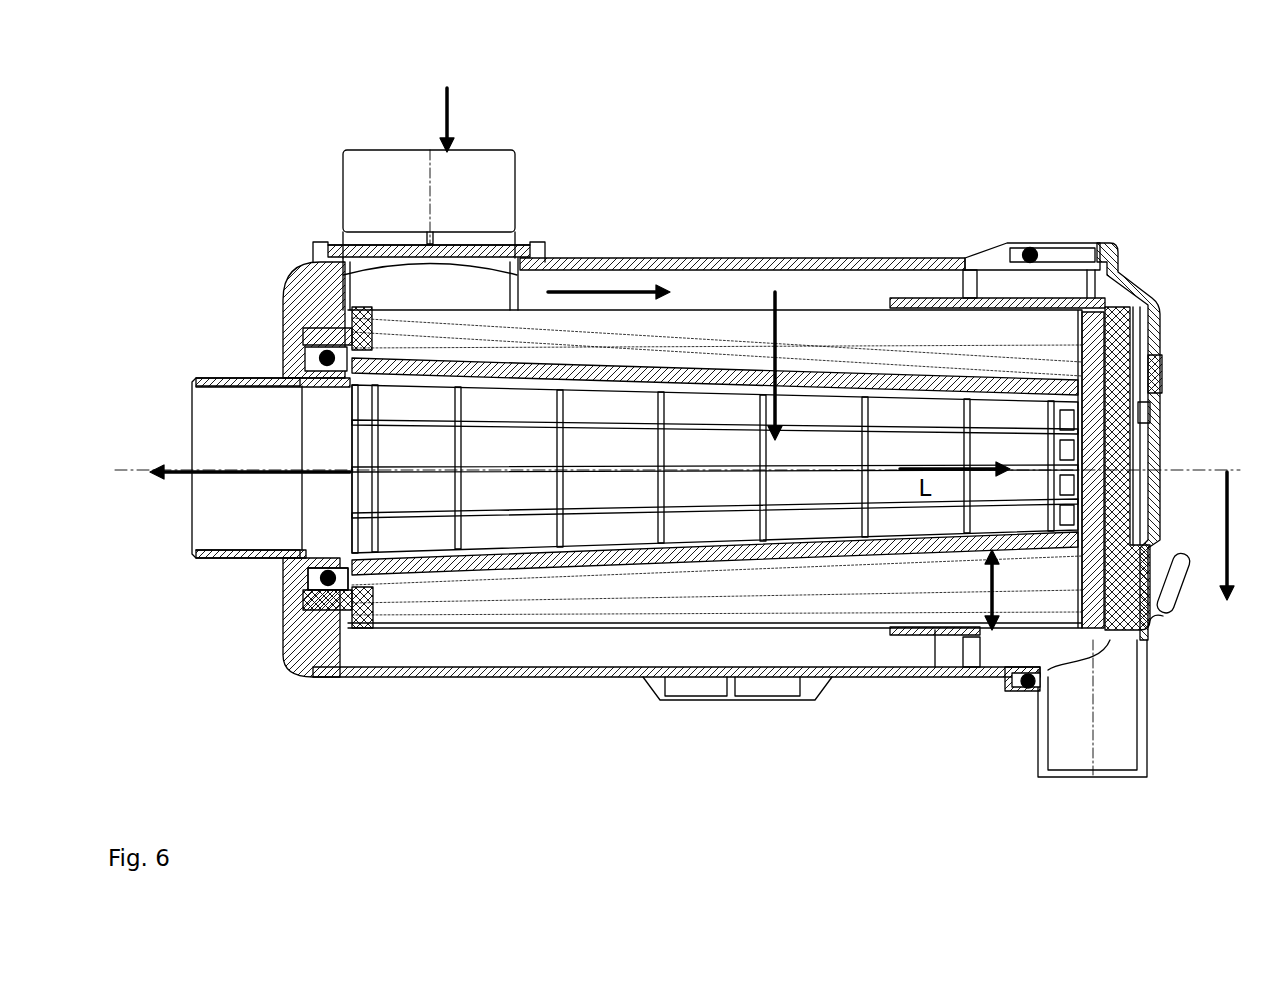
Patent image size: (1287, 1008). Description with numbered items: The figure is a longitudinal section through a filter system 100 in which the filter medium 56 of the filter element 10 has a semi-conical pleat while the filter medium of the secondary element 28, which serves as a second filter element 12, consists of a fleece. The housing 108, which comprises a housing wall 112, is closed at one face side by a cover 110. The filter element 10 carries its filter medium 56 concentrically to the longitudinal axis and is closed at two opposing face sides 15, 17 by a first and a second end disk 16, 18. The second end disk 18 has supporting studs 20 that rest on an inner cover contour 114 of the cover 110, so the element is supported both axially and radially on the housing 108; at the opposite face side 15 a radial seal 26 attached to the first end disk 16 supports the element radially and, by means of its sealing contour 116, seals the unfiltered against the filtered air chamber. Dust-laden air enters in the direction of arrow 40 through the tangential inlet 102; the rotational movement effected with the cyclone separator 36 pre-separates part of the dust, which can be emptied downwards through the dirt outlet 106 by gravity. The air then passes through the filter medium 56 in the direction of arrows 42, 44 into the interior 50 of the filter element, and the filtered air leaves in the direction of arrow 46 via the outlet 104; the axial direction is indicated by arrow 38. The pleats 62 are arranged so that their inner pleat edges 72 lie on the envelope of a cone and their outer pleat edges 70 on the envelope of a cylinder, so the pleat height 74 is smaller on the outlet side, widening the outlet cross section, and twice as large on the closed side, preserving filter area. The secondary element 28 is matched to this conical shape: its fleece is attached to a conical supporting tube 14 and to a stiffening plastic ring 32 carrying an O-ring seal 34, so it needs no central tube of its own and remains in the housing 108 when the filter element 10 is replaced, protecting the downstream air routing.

The filter system 100 is at (1138, 165).
The inlet 102 is at (360, 172).
The outlet 104 is at (233, 405).
The dirt outlet 106 is at (1110, 740).
The housing 108 is at (893, 250).
The cover 110 is at (1160, 338).
The housing wall 112 is at (965, 285).
The inner cover contour 114 is at (1163, 382).
The sealing contour 116 is at (322, 583).
The filter element 10 is at (838, 592).
The second filter element 12 is at (548, 383).
The supporting tube 14 is at (668, 443).
The face side 15 is at (336, 322).
The first end disk 16 is at (367, 605).
The face side 17 is at (1150, 420).
The second end disk 18 is at (1135, 468).
The supporting studs 20 is at (1150, 548).
The radial seal 26 is at (313, 585).
The secondary element 28 is at (717, 274).
The plastic ring 32 is at (306, 568).
The O-ring seal 34 is at (320, 577).
The cyclone separator 36 is at (930, 635).
The axial direction 38 is at (1232, 528).
The arrow 40 is at (452, 113).
The arrow 42 is at (628, 330).
The arrow 44 is at (778, 290).
The arrow 46 is at (183, 480).
The interior 50 is at (808, 492).
The filter medium 56 is at (605, 553).
The pleats 62 is at (845, 632).
The outer pleat edges 70 is at (758, 633).
The inner pleat edges 72 is at (660, 570).
The pleat height 74 is at (992, 632).